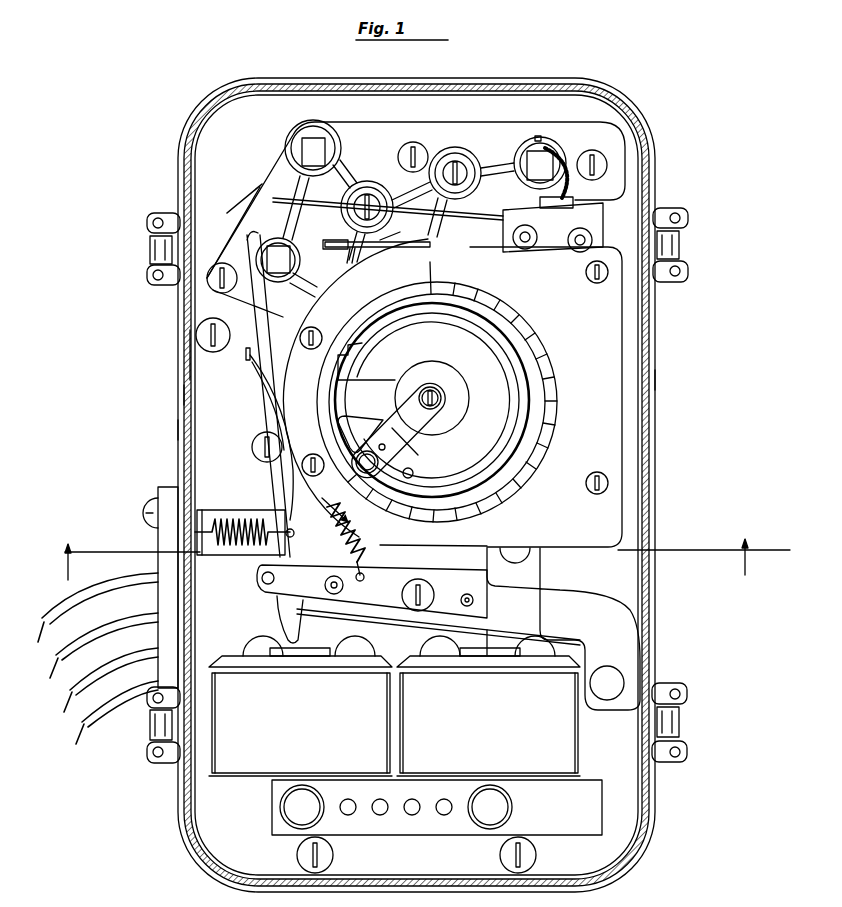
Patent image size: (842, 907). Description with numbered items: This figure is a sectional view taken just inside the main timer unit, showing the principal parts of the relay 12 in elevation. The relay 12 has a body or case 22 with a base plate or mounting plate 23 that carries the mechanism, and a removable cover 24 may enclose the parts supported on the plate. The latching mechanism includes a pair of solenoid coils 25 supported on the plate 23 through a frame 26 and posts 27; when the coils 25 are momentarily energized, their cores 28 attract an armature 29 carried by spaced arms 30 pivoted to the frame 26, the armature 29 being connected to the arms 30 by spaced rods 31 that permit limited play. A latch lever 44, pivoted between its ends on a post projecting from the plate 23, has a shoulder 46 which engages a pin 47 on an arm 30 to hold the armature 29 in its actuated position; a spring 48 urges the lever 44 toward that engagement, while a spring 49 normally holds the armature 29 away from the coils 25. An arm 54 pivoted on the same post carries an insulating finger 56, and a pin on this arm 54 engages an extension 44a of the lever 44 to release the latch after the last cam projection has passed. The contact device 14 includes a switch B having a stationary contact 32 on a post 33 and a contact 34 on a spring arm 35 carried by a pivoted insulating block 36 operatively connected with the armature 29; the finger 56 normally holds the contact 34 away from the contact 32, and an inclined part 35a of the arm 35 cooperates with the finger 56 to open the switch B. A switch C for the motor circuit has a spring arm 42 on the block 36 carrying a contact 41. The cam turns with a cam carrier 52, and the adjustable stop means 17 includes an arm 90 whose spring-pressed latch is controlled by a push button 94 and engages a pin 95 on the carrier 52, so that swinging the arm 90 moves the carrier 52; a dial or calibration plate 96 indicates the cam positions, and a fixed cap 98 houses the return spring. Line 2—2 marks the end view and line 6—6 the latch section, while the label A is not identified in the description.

The relay 12 is at (212, 127).
The body or case 22 is at (190, 356).
The base plate or mounting plate 23 is at (190, 396).
The removable cover 24 is at (190, 432).
The contact device 14 is at (248, 356).
The latch lever 44 is at (290, 497).
The extension 44a is at (263, 407).
The spring 48 is at (228, 522).
The pin 47 is at (262, 575).
The shoulder 46 is at (275, 608).
The spring 49 is at (369, 542).
The section line 6— 6 is at (377, 478).
The push button 94 is at (360, 458).
The adjustable stop means 17 is at (373, 432).
The stop arm 90 is at (398, 430).
The projection or pin 95 is at (413, 473).
The fixed cap 98 is at (456, 383).
The cam carrier 52 is at (446, 397).
The arm 54 is at (282, 352).
The dial or calibration plate 96 is at (546, 397).
The pivoted block 36 is at (565, 222).
The contact 41 is at (349, 252).
The spring arm 42 is at (380, 250).
The stationary contact 32 is at (300, 250).
The post 33 is at (277, 272).
The contact 34 is at (300, 167).
The spring arm 35 is at (358, 188).
The inclined part 35a is at (265, 187).
The finger 56 is at (255, 262).
The spaced rods 31 is at (344, 585).
The cores 28 is at (487, 645).
The armature 29 is at (380, 620).
The spaced arms 30 is at (563, 629).
The solenoid coils 25 is at (394, 706).
The posts 27 is at (298, 807).
The frame 26 is at (437, 807).
The section line 2— 2 is at (417, 563).
The casing wall A is at (660, 380).
The switch B is at (255, 212).
The switch C is at (385, 246).